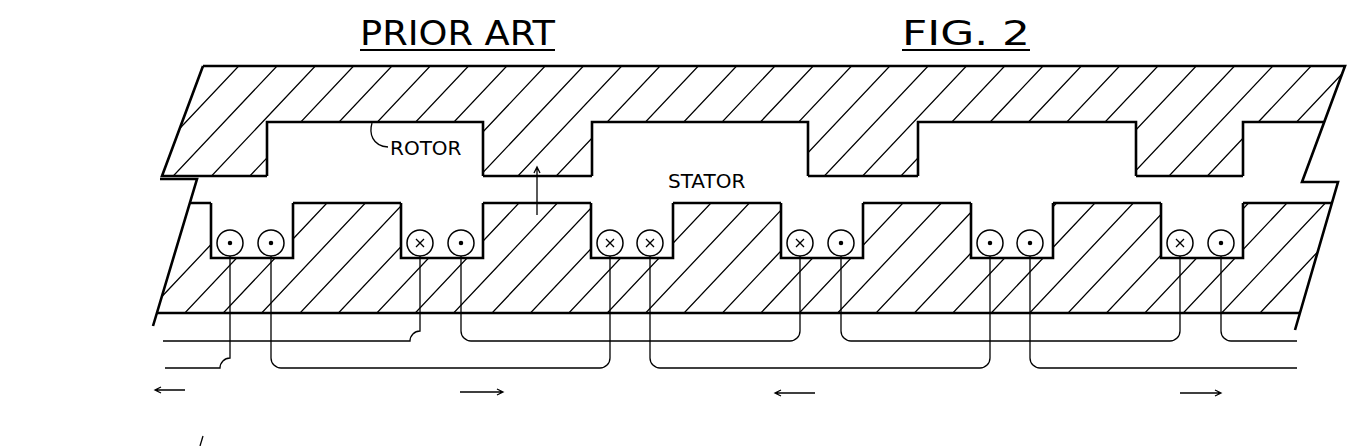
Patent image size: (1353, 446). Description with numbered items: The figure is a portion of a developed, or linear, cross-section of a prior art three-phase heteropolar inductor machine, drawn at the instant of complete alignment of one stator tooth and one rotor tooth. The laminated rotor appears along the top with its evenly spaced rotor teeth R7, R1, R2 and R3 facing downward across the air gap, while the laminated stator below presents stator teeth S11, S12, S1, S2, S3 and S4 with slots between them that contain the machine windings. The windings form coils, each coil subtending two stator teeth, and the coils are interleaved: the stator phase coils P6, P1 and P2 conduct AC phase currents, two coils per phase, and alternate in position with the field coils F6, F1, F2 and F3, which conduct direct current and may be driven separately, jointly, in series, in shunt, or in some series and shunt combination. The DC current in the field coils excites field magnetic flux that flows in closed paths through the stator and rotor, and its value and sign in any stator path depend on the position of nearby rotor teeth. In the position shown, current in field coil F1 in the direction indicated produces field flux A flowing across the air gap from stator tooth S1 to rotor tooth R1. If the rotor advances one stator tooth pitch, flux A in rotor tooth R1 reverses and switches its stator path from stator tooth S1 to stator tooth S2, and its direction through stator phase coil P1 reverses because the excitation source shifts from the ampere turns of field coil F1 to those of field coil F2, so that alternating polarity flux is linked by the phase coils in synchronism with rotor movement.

The rotor tooth R7 is at (262, 150).
The rotor tooth R1 is at (583, 155).
The rotor tooth R2 is at (908, 152).
The rotor tooth R3 is at (1235, 157).
The field flux A is at (545, 182).
The stator tooth S11 is at (200, 225).
The stator tooth S12 is at (390, 226).
The stator tooth S1 is at (580, 230).
The stator tooth S2 is at (768, 231).
The stator tooth S3 is at (962, 232).
The stator tooth S4 is at (1156, 233).
The stator phase coil P6 is at (253, 342).
The stator phase coil P1 is at (623, 341).
The stator phase coil P2 is at (1008, 342).
The field coil F6 is at (210, 368).
The field coil F1 is at (418, 368).
The field coil F2 is at (862, 369).
The field coil F3 is at (1273, 370).